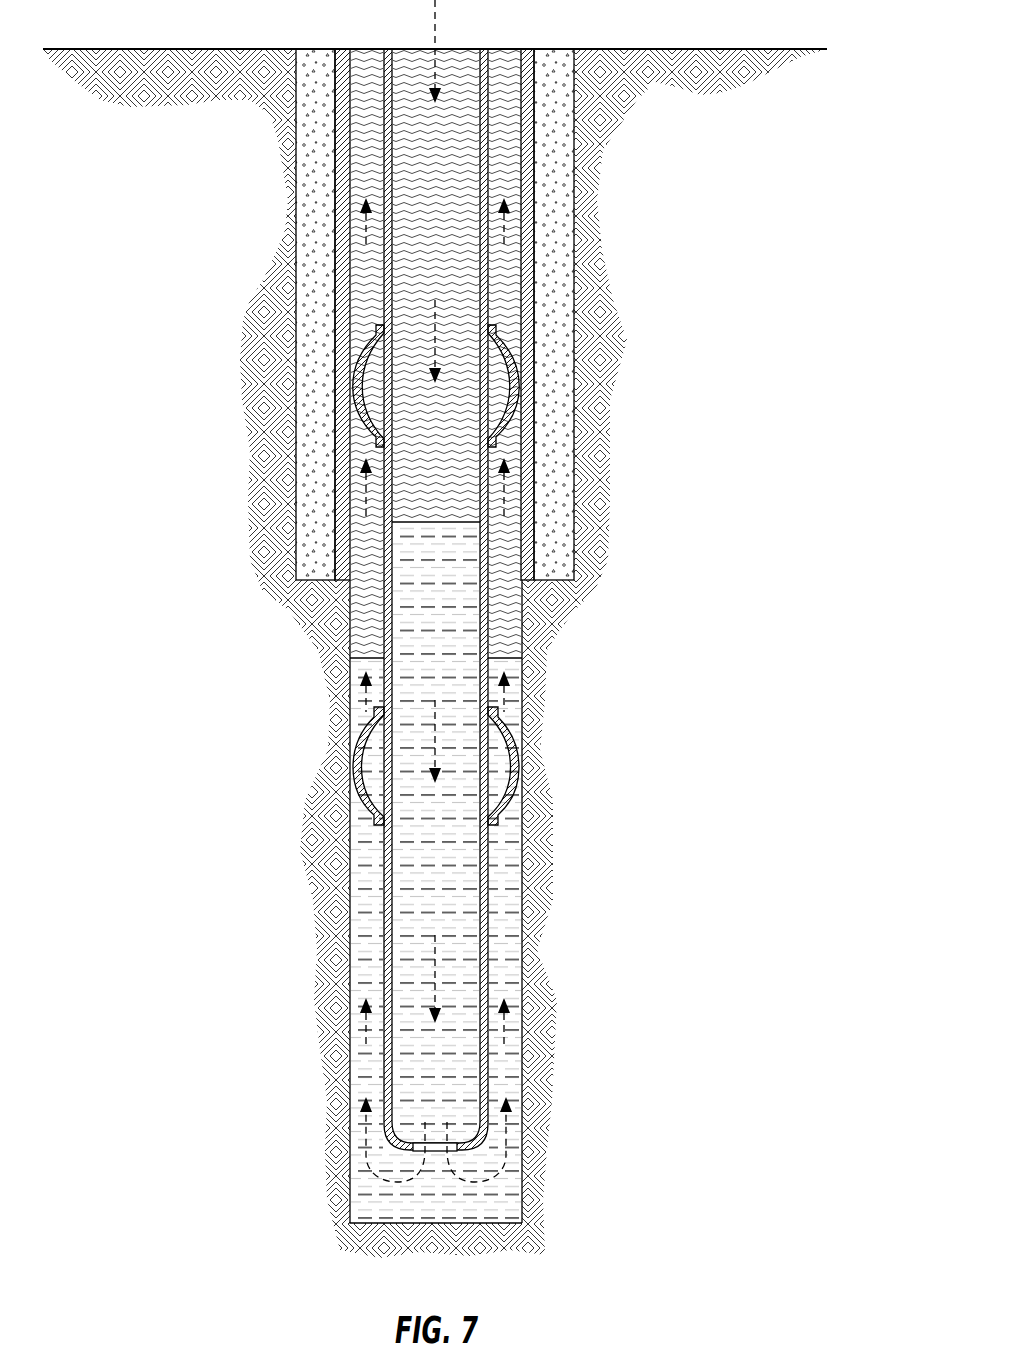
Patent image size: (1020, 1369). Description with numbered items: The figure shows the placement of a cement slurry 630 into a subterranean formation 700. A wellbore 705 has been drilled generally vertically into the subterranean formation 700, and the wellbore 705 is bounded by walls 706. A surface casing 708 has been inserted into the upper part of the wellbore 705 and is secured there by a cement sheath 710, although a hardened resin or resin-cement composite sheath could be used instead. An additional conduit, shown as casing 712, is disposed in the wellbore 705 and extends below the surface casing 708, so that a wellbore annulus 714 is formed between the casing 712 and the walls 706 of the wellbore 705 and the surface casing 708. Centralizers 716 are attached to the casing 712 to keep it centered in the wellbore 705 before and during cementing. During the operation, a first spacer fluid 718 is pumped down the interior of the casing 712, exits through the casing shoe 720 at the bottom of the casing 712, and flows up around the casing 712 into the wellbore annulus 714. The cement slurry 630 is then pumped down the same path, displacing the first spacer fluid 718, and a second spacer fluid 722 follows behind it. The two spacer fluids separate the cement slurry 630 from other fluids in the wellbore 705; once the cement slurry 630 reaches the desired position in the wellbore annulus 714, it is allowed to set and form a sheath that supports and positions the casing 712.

The subterranean formation 700 is at (316, 866).
The wellbore 705 is at (288, 180).
The walls 706 is at (523, 638).
The surface casing 708 is at (535, 187).
The cement sheath 710 is at (545, 282).
The casing 712 is at (480, 770).
The wellbore annulus 714 is at (356, 931).
The centralizers 716 is at (362, 355).
The first spacer fluid 718 is at (362, 582).
The casing shoe 720 is at (460, 1148).
The second spacer fluid 722 is at (413, 63).
The cement slurry 630 is at (462, 921).